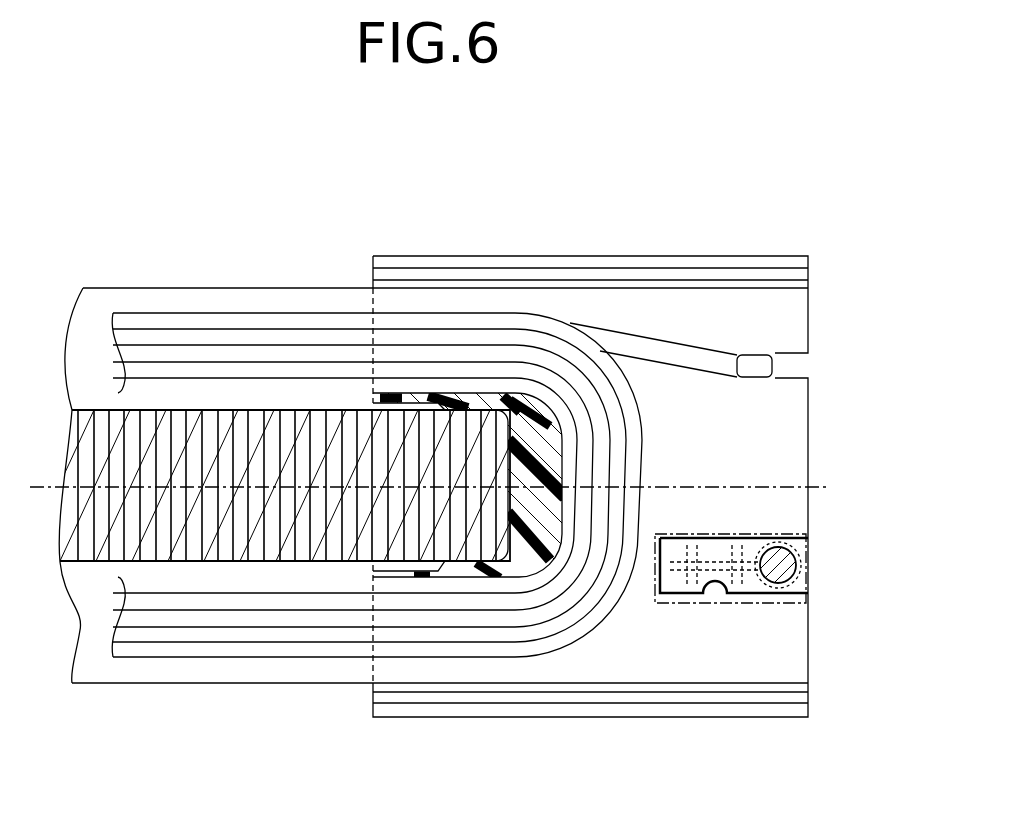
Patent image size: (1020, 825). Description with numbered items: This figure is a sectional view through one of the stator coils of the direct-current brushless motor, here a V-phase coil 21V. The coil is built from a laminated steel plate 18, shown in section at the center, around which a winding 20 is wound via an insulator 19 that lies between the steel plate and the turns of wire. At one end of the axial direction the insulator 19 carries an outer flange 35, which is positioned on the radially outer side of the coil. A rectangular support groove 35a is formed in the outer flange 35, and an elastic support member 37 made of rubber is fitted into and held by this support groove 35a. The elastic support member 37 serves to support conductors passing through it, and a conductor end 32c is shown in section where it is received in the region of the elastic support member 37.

The laminated steel plate 18 is at (223, 552).
The insulator 19 is at (200, 288).
The winding 20 is at (270, 652).
The V-phase coil 21V is at (295, 288).
The outer flange 35 is at (612, 257).
The support groove 35a is at (715, 595).
The elastic support member 37 is at (726, 536).
The pin 32c is at (790, 572).